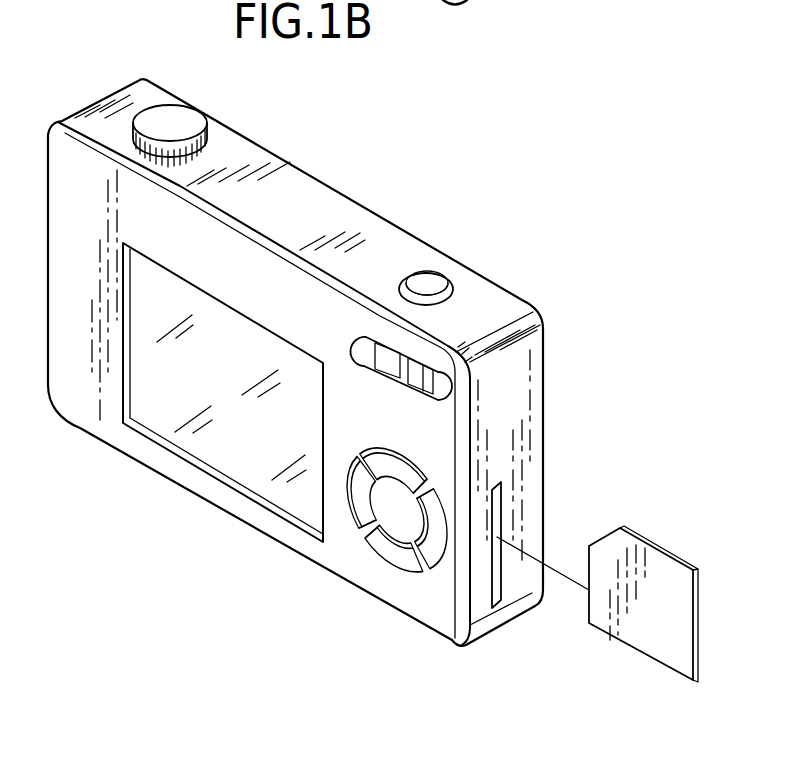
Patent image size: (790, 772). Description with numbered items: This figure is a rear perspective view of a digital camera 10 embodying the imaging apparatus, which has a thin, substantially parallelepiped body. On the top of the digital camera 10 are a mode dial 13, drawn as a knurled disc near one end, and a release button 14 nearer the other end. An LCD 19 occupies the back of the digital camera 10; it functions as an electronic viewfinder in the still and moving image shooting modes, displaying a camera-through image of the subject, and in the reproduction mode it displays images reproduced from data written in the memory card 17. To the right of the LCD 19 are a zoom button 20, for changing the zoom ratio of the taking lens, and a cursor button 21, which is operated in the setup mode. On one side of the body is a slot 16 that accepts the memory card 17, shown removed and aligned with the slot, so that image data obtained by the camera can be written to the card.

The digital camera 10 is at (356, 177).
The mode dial 13 is at (185, 121).
The release button 14 is at (434, 281).
The memory card slot 16 is at (497, 582).
The memory card 17 is at (657, 557).
The LCD 19 is at (150, 338).
The zoom button 20 is at (433, 391).
The cursor button 21 is at (383, 553).